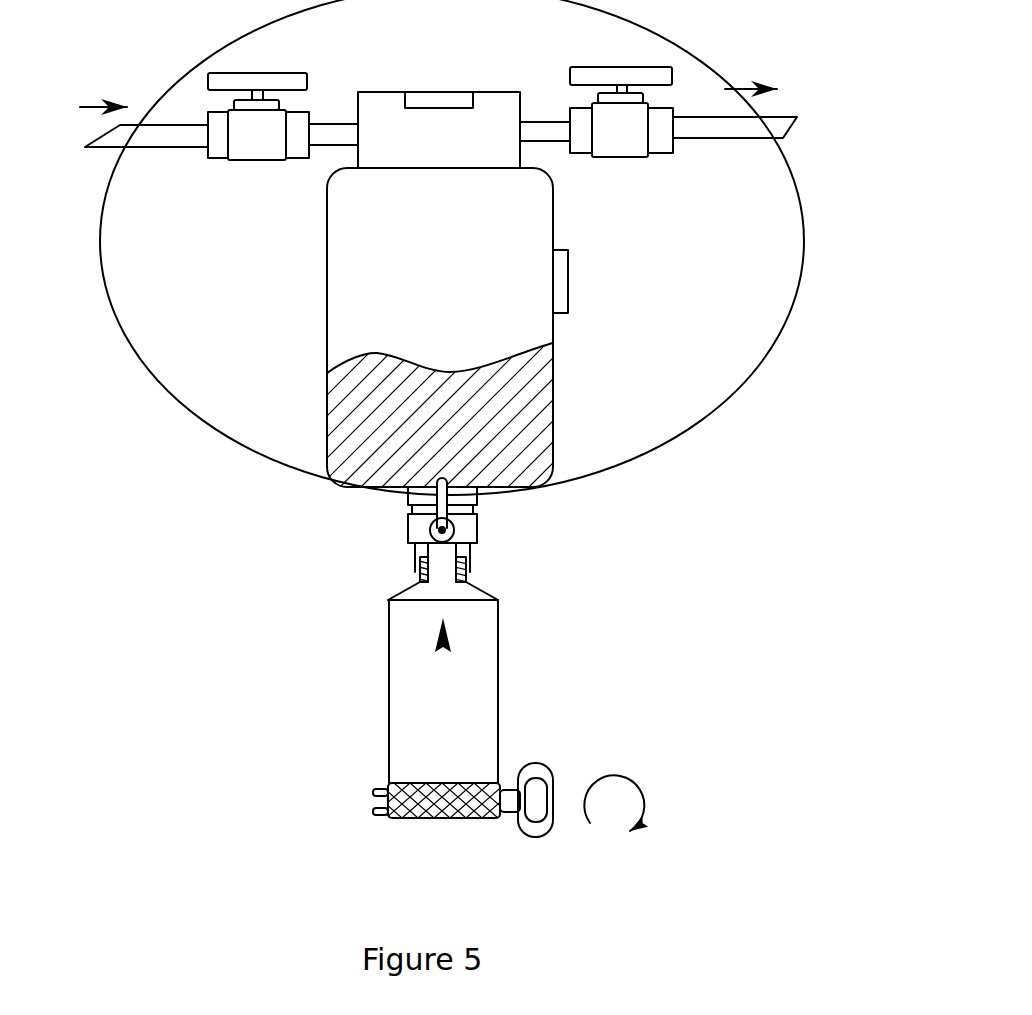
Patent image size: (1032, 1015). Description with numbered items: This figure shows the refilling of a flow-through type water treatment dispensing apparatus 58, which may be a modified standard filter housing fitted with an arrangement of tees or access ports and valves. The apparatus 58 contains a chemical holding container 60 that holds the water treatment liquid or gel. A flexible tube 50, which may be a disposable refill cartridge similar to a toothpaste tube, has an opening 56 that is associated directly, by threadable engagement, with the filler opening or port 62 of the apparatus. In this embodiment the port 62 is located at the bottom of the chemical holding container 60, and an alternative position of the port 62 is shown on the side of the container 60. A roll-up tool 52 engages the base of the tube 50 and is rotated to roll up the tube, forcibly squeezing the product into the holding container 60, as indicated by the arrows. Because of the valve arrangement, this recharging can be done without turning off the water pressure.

The tube 50 is at (445, 665).
The roll-up tool 52 is at (548, 772).
The opening of the tube 56 is at (418, 575).
The water treatment dispensing apparatus 58 is at (795, 187).
The chemical holding container 60 is at (395, 287).
The port 62 is at (570, 292).